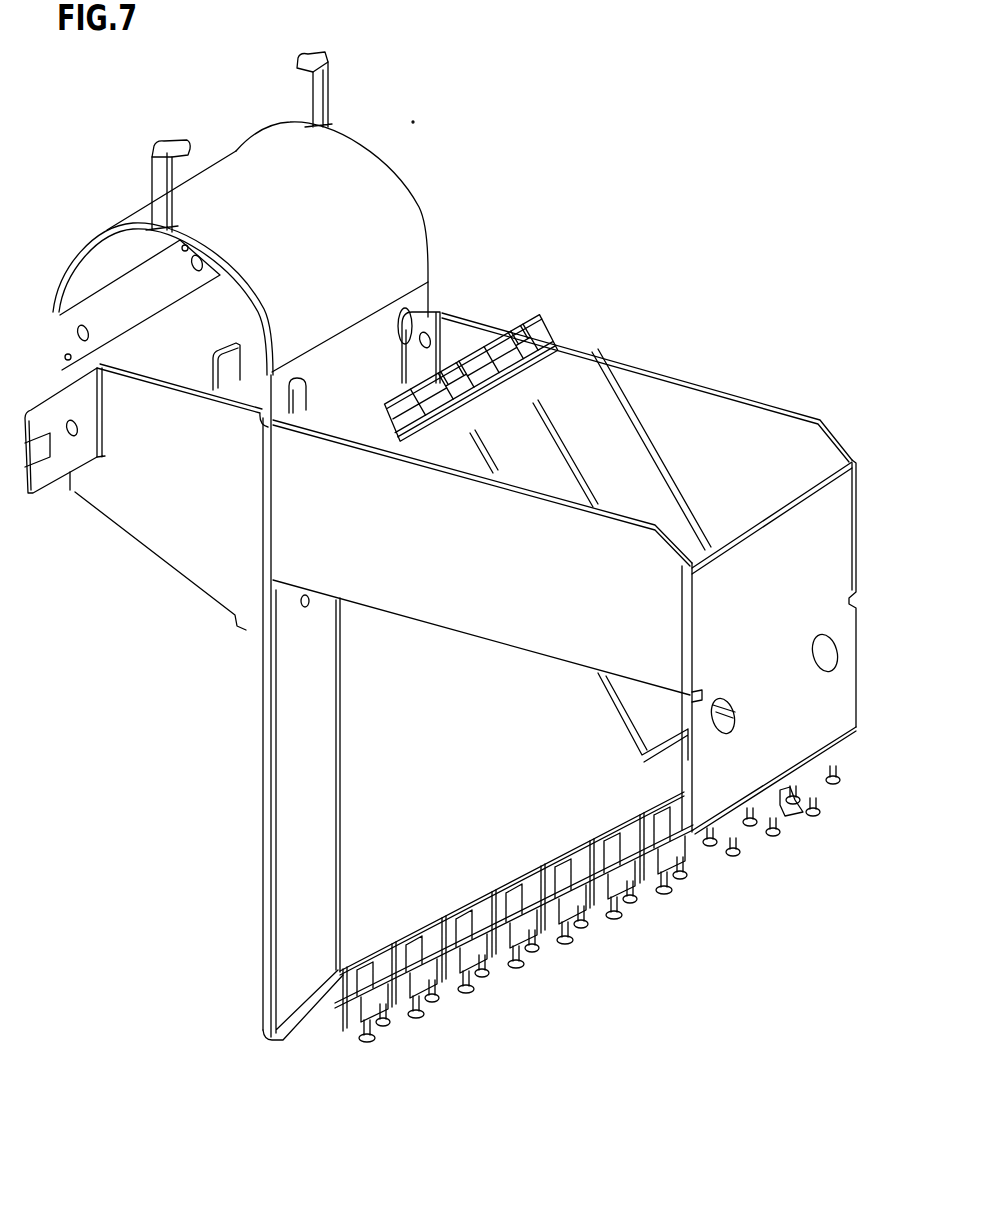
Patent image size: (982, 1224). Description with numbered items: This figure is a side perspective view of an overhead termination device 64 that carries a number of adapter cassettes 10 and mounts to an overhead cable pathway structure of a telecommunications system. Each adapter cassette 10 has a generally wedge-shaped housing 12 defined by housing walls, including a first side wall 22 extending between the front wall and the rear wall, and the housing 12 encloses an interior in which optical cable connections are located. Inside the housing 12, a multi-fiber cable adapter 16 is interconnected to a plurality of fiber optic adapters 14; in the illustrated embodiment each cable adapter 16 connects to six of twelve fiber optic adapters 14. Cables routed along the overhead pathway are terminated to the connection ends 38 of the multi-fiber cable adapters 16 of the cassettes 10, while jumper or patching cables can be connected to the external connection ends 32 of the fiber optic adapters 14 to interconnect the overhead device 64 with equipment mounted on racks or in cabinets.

The adapter cassette 10 is at (527, 417).
The housing 12 is at (395, 797).
The fiber optic adapters 14 is at (698, 988).
The multi-fiber cable adapter 16 is at (580, 275).
The first side wall 22 is at (550, 480).
The external connection end 32 is at (652, 873).
The connection end of multi-fiber cable adapter 38 is at (513, 327).
The termination device 64 is at (135, 600).